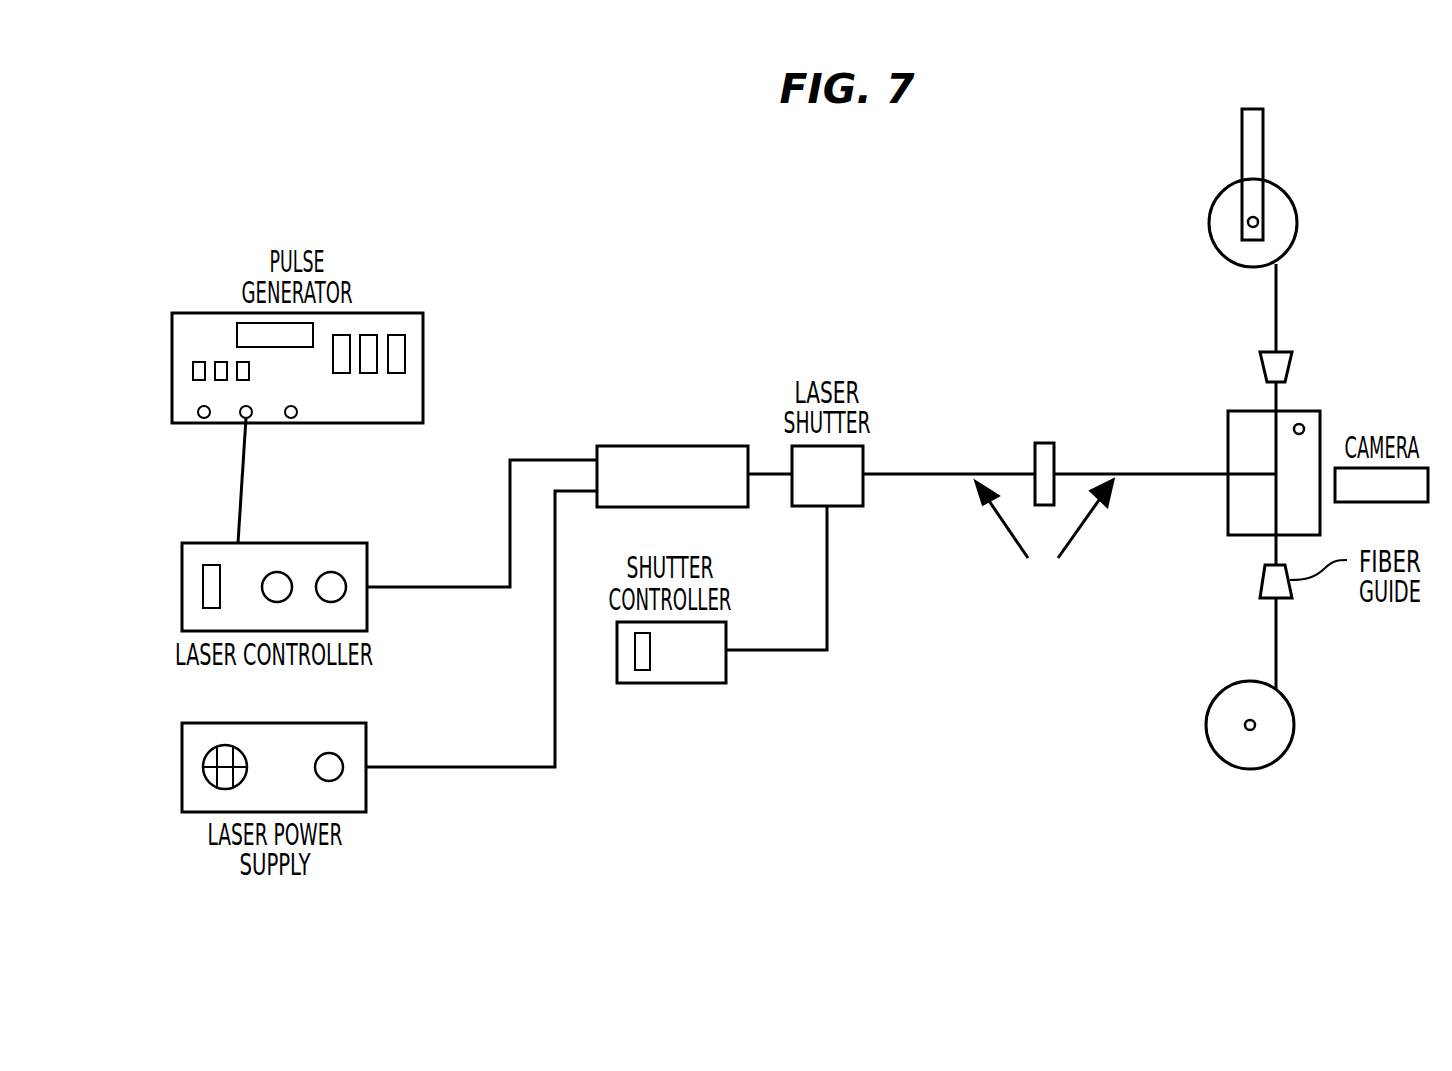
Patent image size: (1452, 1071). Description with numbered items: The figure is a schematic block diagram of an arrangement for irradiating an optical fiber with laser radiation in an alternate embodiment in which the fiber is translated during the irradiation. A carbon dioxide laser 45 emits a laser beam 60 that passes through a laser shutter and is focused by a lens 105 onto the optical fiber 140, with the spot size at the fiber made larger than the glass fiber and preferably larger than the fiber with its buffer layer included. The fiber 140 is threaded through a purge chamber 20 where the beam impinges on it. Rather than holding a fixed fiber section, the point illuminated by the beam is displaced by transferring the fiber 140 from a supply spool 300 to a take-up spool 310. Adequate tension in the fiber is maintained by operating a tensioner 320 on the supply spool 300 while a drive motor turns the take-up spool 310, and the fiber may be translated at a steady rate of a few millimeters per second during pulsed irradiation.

The CO2 laser 45 is at (738, 507).
The lens 105 is at (1043, 443).
The laser beam 60 is at (1057, 660).
The tensioner 320 is at (1242, 143).
The supply spool 300 is at (1287, 190).
The purge chamber 20 is at (1315, 411).
The fiber 140 is at (1276, 618).
The take-up spool 310 is at (1268, 765).